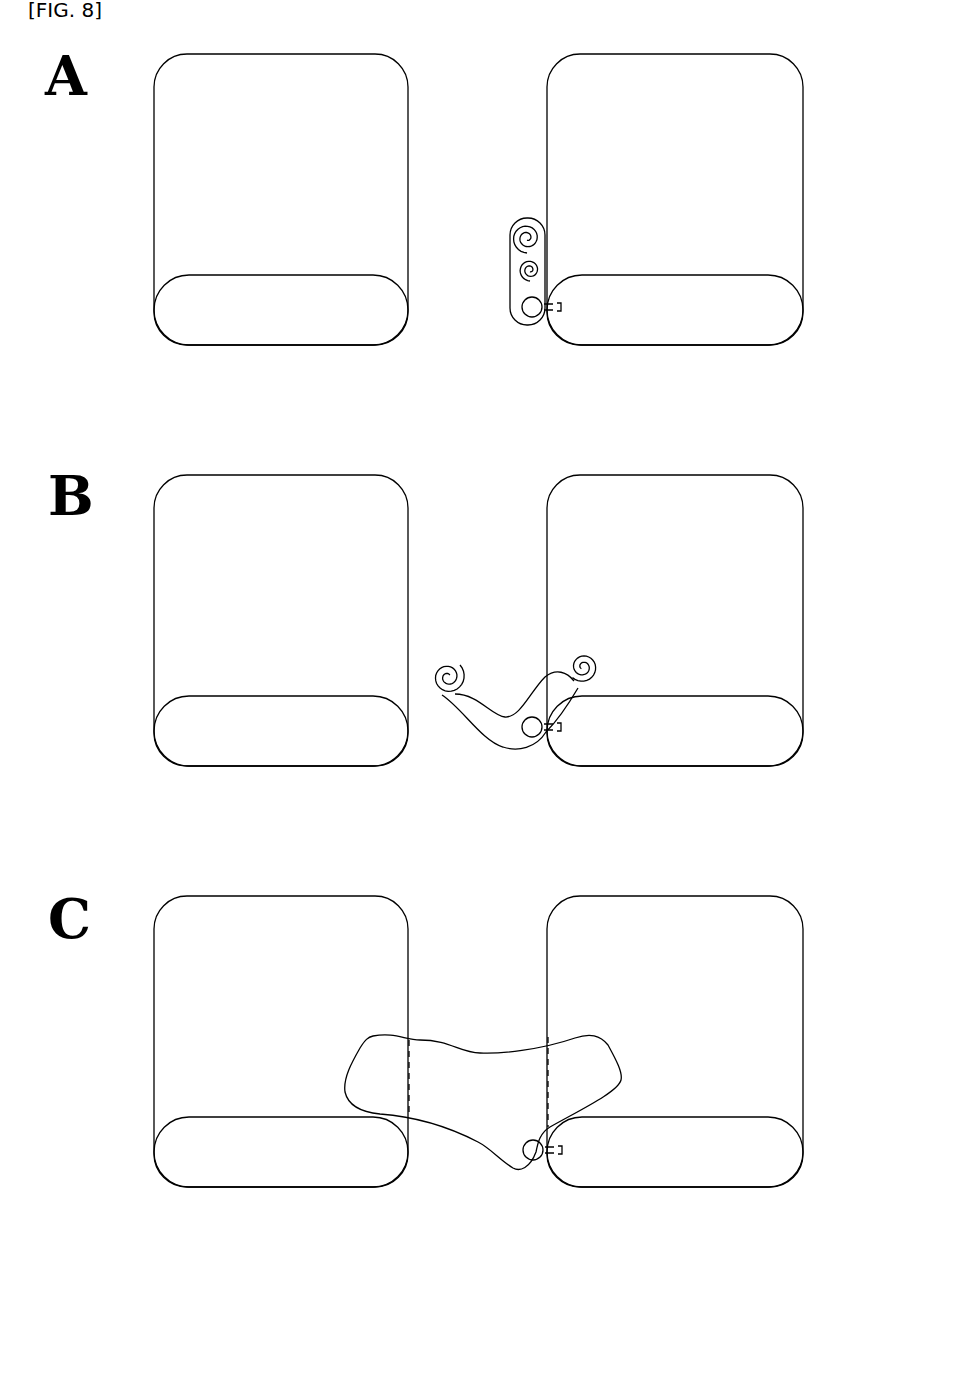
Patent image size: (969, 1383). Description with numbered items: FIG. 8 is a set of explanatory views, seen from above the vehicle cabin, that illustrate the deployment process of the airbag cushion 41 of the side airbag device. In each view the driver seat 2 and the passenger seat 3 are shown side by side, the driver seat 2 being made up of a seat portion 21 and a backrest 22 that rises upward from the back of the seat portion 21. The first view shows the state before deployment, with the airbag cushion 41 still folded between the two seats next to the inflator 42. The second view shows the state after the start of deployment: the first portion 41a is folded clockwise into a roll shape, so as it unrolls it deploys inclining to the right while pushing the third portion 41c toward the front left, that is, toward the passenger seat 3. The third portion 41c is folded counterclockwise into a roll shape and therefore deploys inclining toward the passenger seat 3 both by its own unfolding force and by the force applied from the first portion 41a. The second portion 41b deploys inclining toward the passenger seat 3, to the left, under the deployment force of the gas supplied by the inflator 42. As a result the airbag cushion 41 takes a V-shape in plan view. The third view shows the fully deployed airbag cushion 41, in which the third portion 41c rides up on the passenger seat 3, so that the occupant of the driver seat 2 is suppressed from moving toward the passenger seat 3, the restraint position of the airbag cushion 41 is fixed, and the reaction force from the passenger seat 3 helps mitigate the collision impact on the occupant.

The driver seat 2 is at (711, 646).
The passenger seat 3 is at (142, 192).
The seat portion 21 is at (802, 133).
The backrest 22 is at (725, 347).
The airbag cushion 41 is at (483, 684).
The first portion 41a is at (518, 267).
The second portion 41b is at (508, 296).
The third portion 41c is at (527, 212).
The inflator 42 is at (532, 317).